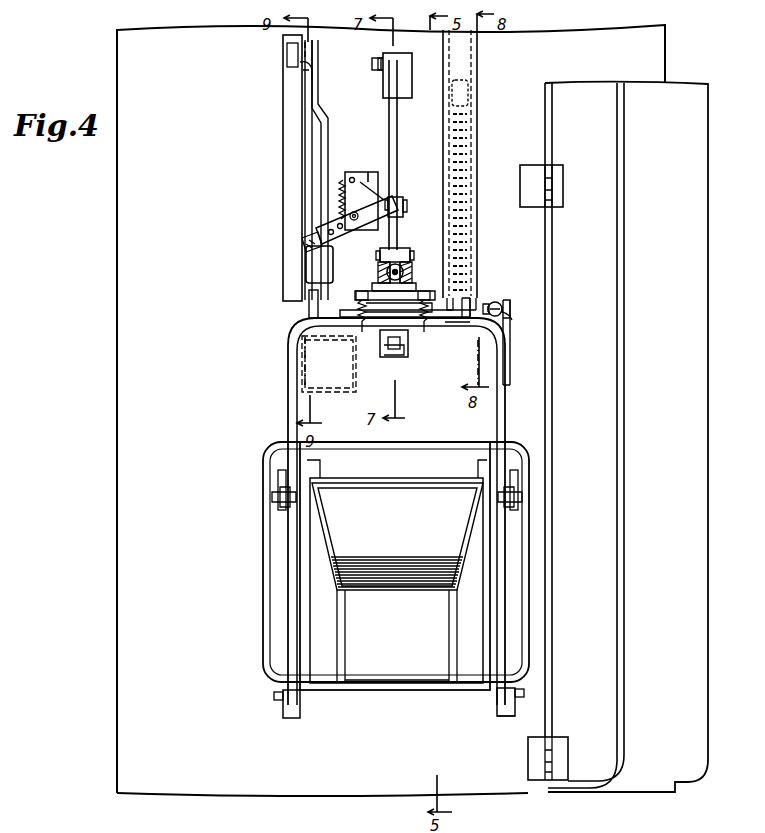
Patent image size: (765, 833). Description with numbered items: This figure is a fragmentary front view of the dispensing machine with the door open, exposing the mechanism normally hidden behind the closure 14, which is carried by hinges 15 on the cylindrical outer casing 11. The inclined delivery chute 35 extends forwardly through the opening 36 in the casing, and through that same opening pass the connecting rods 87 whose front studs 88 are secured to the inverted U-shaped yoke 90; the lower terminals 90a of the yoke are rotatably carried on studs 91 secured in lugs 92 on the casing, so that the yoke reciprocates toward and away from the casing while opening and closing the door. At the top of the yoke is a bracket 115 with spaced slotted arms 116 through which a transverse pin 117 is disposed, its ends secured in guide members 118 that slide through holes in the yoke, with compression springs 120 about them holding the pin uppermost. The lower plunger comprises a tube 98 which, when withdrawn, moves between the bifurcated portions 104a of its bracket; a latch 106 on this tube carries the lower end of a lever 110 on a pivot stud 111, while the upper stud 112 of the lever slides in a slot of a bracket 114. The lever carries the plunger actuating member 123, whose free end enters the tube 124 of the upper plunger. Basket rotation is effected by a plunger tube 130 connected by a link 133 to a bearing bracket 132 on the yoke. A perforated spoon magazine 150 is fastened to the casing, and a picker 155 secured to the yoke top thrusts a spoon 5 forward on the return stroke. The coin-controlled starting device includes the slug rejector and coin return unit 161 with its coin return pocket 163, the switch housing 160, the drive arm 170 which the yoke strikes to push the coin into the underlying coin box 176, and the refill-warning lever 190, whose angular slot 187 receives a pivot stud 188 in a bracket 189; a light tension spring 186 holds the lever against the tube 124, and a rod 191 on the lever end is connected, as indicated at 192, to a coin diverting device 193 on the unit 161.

The perforated strip 5 is at (480, 133).
The outer casing 11 is at (117, 655).
The closure 14 is at (683, 667).
The hinges 15 is at (546, 775).
The delivery chute 35 is at (395, 566).
The opening 36 is at (272, 645).
The connecting rods 87 is at (282, 478).
The studs 88 is at (275, 497).
The yoke 90 is at (288, 405).
The lower terminals 90a is at (300, 708).
The studs 91 is at (526, 696).
The lugs 92 is at (512, 716).
The tube 98 is at (404, 273).
The bifurcated portions 104a is at (406, 268).
The latch 106 is at (378, 269).
The lever 110 is at (400, 108).
The pivot stud 111 is at (380, 252).
The stud 112 is at (372, 63).
The bracket 114 is at (406, 55).
The bracket 115 is at (420, 318).
The slotted arms 116 is at (390, 345).
The pin 117 is at (360, 297).
The guide members 118 is at (358, 312).
The compression springs 120 is at (425, 318).
The plunger actuating member 123 is at (400, 197).
The tube 124 is at (400, 215).
The plunger tube 130 is at (499, 303).
The bearing bracket 132 is at (508, 380).
The link 133 is at (510, 314).
The spoon magazine 150 is at (545, 72).
The picker 155 is at (472, 300).
The housing 160 is at (290, 250).
The slug rejector and coin return unit 161 is at (285, 192).
The coin return pocket 163 is at (312, 273).
The drive arm 170 is at (309, 314).
The coin box 176 is at (343, 366).
The tension spring 186 is at (345, 210).
The angular slot 187 is at (368, 172).
The pivot stud 188 is at (352, 175).
The bracket 189 is at (378, 178).
The lever 190 is at (384, 200).
The rod 191 is at (323, 140).
The connection 192 is at (300, 62).
The coin diverting device 193 is at (307, 127).